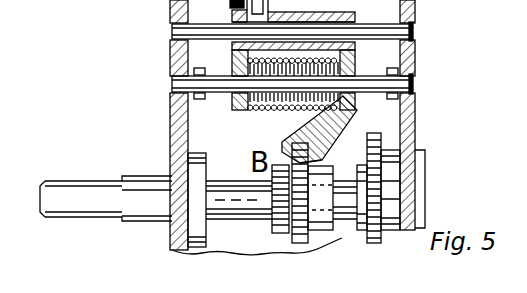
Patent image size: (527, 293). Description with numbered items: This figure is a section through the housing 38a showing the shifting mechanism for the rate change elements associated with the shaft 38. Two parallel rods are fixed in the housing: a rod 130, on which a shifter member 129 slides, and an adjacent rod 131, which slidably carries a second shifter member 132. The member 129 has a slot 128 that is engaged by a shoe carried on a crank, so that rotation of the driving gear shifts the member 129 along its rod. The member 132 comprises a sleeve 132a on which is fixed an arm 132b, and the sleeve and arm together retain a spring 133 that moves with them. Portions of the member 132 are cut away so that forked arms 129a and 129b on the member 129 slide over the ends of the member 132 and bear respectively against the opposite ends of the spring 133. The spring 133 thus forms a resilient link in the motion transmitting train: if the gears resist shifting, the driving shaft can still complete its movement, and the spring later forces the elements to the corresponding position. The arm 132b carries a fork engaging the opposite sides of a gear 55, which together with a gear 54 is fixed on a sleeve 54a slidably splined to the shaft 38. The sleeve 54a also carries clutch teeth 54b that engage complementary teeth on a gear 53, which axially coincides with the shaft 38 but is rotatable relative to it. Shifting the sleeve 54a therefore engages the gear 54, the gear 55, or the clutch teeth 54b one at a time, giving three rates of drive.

The shaft 38 is at (162, 182).
The housing 38a is at (176, 60).
The gear 53 is at (370, 137).
The gear 54 is at (272, 232).
The sleeve 54a is at (357, 232).
The clutch teeth 54b is at (376, 240).
The gear 55 is at (300, 242).
The slot 128 is at (249, 4).
The shifter member 129 is at (330, 20).
The forked arm 129a is at (352, 57).
The forked arm 129b is at (233, 57).
The rod 130 is at (413, 30).
The rod 131 is at (410, 72).
The shifter member 132 is at (291, 95).
The sleeve 132a is at (250, 110).
The arm 132b is at (340, 120).
The spring 133 is at (319, 129).